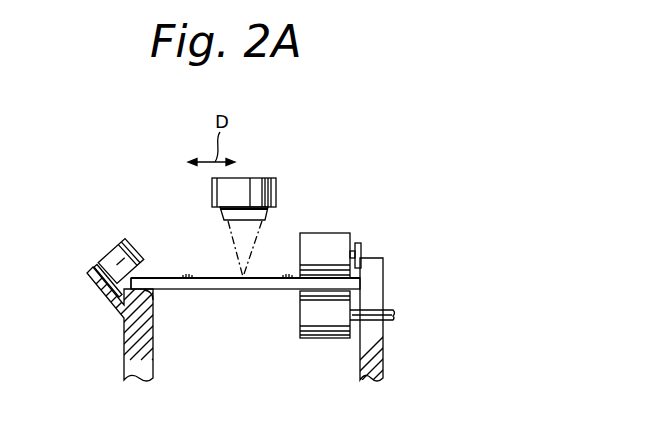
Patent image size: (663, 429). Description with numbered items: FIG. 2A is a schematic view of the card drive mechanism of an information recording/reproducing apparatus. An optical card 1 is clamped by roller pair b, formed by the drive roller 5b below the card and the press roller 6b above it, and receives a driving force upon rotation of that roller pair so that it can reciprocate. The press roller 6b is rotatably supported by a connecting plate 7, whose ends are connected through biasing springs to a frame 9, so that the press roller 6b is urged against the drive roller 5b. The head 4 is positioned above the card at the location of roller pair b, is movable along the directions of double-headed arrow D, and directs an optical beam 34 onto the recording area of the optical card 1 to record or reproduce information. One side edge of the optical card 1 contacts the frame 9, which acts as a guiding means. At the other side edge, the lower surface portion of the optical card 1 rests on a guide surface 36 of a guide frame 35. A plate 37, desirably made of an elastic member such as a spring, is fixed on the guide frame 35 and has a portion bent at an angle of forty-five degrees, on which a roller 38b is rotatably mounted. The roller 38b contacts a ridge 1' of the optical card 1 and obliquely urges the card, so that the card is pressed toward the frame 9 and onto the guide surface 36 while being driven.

The optical card 1 is at (245, 307).
The ridge 1' is at (153, 252).
The head 4 is at (263, 179).
The drive roller 5b is at (325, 332).
The press roller 6b is at (333, 243).
The connecting plate 7 is at (362, 242).
The frame 9 is at (383, 282).
The optical beam 34 is at (255, 247).
The guide frame 35 is at (142, 362).
The guide surface 36 is at (153, 298).
The plate 37 is at (107, 300).
The roller 38b is at (110, 255).